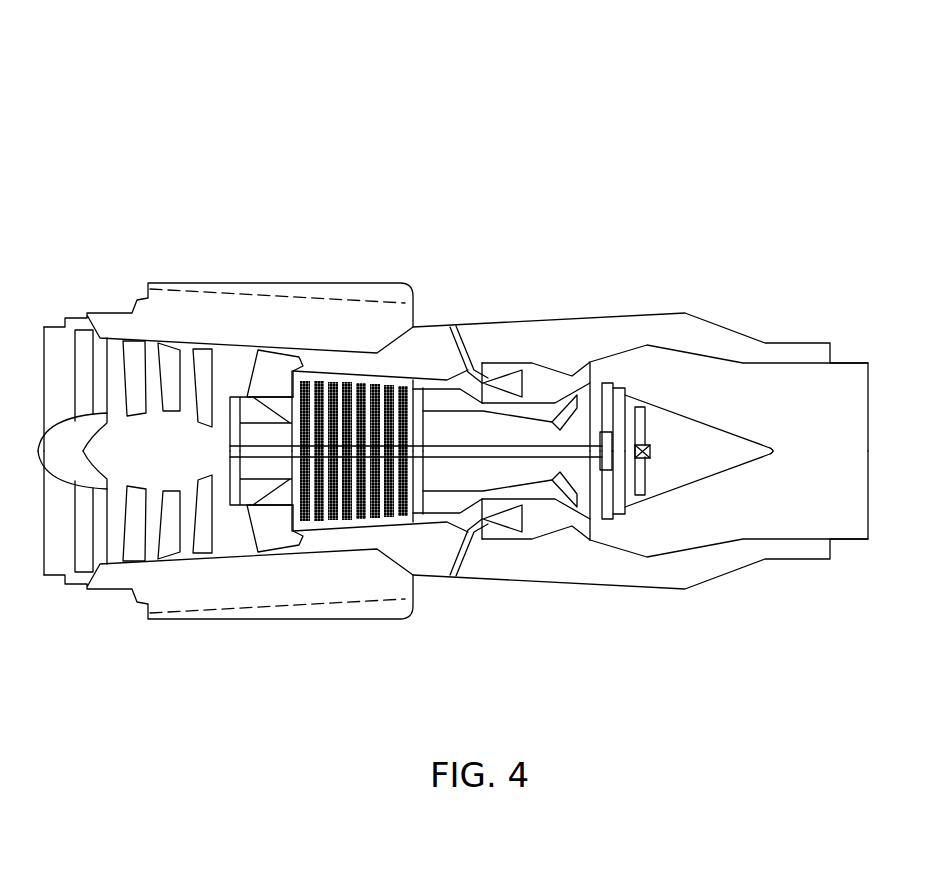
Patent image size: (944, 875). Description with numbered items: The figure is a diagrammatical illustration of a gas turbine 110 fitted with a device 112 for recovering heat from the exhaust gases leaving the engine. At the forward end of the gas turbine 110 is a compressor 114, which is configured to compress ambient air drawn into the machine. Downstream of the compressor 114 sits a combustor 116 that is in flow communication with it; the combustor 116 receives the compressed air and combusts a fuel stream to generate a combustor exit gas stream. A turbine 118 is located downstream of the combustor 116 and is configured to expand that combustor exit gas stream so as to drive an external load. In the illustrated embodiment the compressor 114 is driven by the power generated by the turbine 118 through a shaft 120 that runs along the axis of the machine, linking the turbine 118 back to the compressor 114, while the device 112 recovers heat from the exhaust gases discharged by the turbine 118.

The gas turbine 110 is at (702, 92).
The device for recovering heat 112 is at (651, 451).
The compressor 114 is at (320, 377).
The combustor 116 is at (545, 372).
The turbine 118 is at (631, 402).
The shaft 120 is at (463, 450).